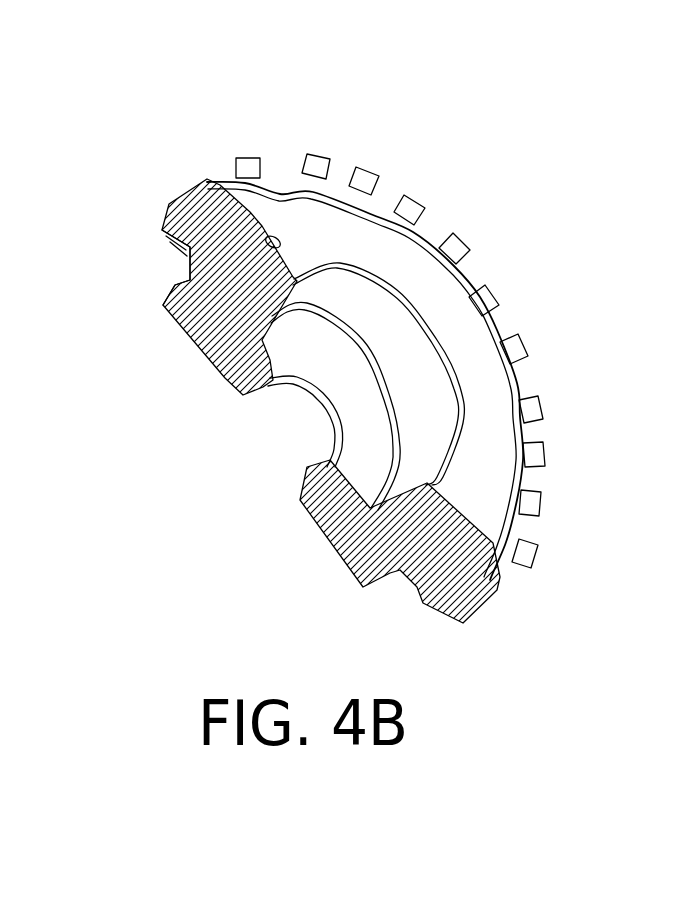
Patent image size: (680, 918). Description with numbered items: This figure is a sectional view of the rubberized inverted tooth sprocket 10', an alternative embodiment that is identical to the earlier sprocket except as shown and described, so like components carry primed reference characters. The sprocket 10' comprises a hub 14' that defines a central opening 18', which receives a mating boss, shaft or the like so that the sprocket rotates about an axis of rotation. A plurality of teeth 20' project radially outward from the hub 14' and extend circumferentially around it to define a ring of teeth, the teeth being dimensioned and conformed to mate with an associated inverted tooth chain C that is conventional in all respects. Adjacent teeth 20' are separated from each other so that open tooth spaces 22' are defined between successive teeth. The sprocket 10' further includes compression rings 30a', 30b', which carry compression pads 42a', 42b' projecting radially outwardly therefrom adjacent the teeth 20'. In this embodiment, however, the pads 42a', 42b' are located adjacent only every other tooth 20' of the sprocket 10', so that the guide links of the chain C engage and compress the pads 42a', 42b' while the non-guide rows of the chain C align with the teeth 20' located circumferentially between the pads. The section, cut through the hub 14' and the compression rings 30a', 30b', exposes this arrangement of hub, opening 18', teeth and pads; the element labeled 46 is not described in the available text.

The rubberized inverted tooth sprocket 10' is at (400, 381).
The hub 14' is at (362, 349).
The central opening 18' is at (275, 444).
The teeth 20' is at (229, 240).
The tooth spaces 22' is at (395, 127).
The compression pad 42a' is at (294, 108).
The compression pad 42b' is at (130, 282).
The compression ring 30a' is at (599, 511).
The compression ring 30b' is at (425, 567).
The component 46 is at (665, 377).
The inverted tooth chain C is at (662, 174).